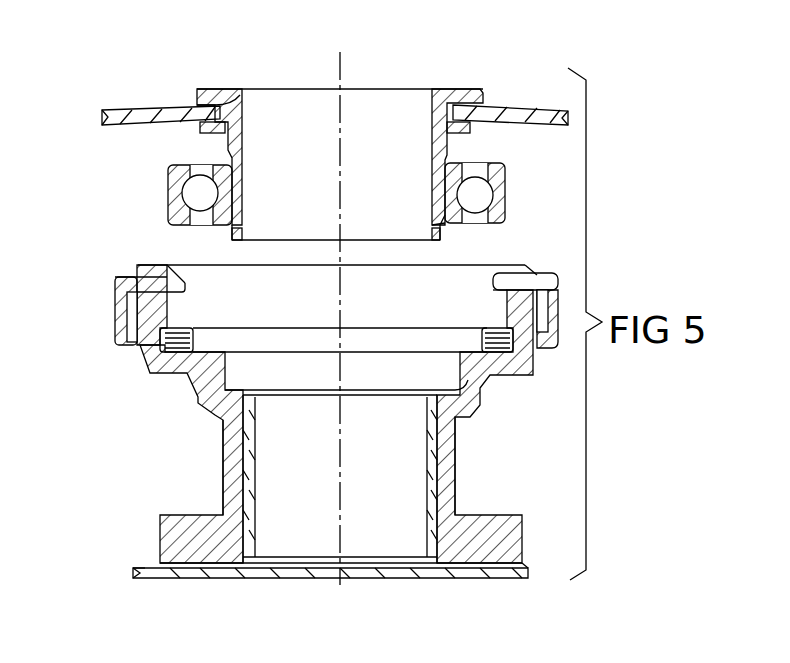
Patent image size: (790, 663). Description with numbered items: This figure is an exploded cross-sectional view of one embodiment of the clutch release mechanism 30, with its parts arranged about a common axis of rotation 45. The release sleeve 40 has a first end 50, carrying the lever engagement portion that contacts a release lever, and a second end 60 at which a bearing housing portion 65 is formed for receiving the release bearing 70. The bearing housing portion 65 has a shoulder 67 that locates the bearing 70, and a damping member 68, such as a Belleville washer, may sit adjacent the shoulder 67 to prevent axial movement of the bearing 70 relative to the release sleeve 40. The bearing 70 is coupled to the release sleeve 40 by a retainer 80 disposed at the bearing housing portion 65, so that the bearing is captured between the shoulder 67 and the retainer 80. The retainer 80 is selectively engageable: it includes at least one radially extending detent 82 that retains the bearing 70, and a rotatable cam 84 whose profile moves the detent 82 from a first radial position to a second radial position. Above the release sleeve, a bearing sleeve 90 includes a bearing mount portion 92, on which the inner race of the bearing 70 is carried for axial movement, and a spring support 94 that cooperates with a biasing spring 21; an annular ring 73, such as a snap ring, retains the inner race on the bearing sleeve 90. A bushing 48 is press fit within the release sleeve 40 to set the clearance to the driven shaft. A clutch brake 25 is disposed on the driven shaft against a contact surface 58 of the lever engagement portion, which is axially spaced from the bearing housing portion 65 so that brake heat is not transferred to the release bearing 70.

The biasing spring 21 is at (128, 117).
The clutch brake 25 is at (460, 572).
The release mechanism 30 is at (287, 395).
The release sleeve 40 is at (468, 456).
The axis of rotation 45 is at (348, 57).
The bushing 48 is at (423, 515).
The first end 50 is at (522, 574).
The contact surface 58 is at (178, 562).
The second end 60 is at (132, 368).
The bearing housing portion 65 is at (142, 268).
The shoulder 67 is at (480, 353).
The damping member 68 is at (177, 340).
The release bearing 70 is at (150, 198).
The annular ring 73 is at (450, 228).
The retainer 80 is at (291, 312).
The detent 82 is at (500, 288).
The cam 84 is at (128, 312).
The bearing sleeve 90 is at (340, 125).
The bearing mount portion 92 is at (243, 197).
The spring support 94 is at (248, 108).